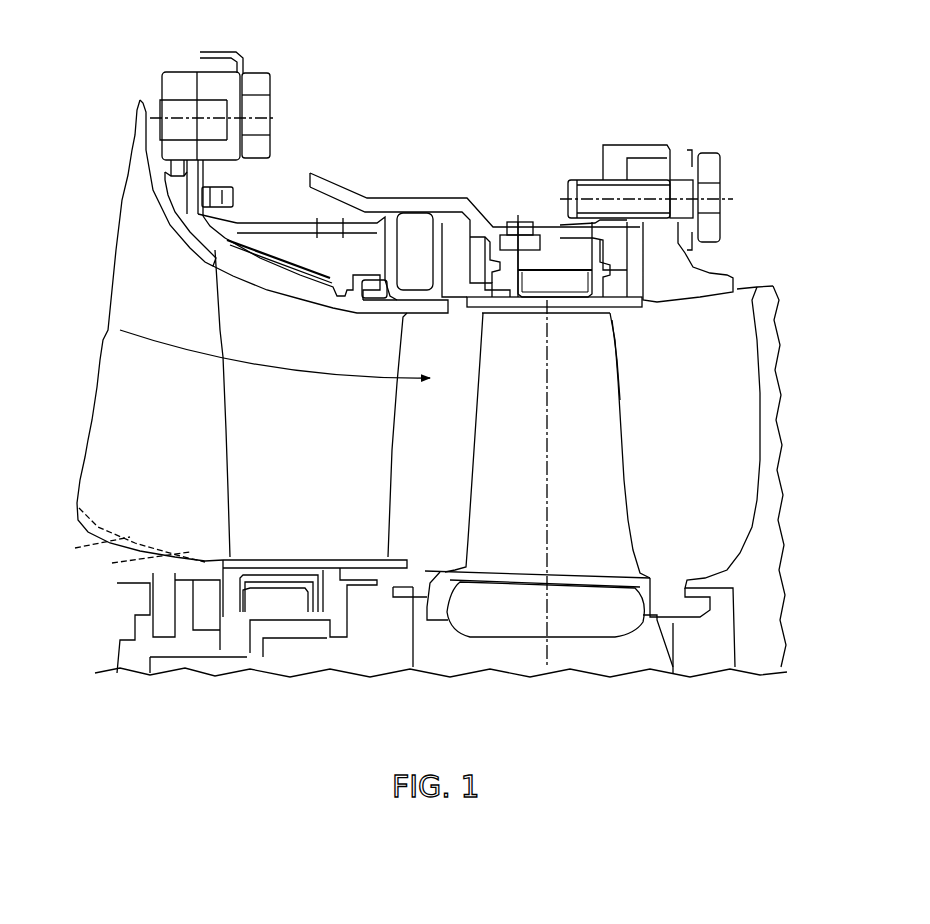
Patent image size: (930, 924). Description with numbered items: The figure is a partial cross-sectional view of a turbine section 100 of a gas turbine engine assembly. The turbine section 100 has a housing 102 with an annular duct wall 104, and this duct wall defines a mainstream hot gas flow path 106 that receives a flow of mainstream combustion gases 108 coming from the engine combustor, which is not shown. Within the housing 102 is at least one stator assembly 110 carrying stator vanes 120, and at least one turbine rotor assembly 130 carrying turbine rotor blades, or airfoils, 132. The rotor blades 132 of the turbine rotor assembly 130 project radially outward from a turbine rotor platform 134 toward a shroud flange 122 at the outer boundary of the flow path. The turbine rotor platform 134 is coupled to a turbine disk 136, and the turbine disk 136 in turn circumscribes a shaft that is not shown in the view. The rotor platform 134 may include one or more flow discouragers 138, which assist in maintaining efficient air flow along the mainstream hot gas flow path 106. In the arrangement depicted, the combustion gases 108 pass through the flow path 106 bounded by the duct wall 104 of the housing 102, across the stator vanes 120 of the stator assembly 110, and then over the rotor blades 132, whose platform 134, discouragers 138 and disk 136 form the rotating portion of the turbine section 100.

The turbine section 100 is at (737, 164).
The housing 102 is at (195, 179).
The annular duct wall 104 is at (426, 265).
The mainstream hot gas flow path 106 is at (423, 388).
The flow of mainstream combustion gases 108 is at (275, 371).
The stator assembly 110 is at (273, 403).
The stator vanes 120 is at (524, 476).
The shroud flange 122 is at (600, 440).
The turbine rotor assembly 130 is at (585, 445).
The turbine rotor blades 132 is at (644, 360).
The turbine rotor platform 134 is at (550, 560).
The turbine disk 136 is at (533, 642).
The flow discouragers 138 is at (423, 620).